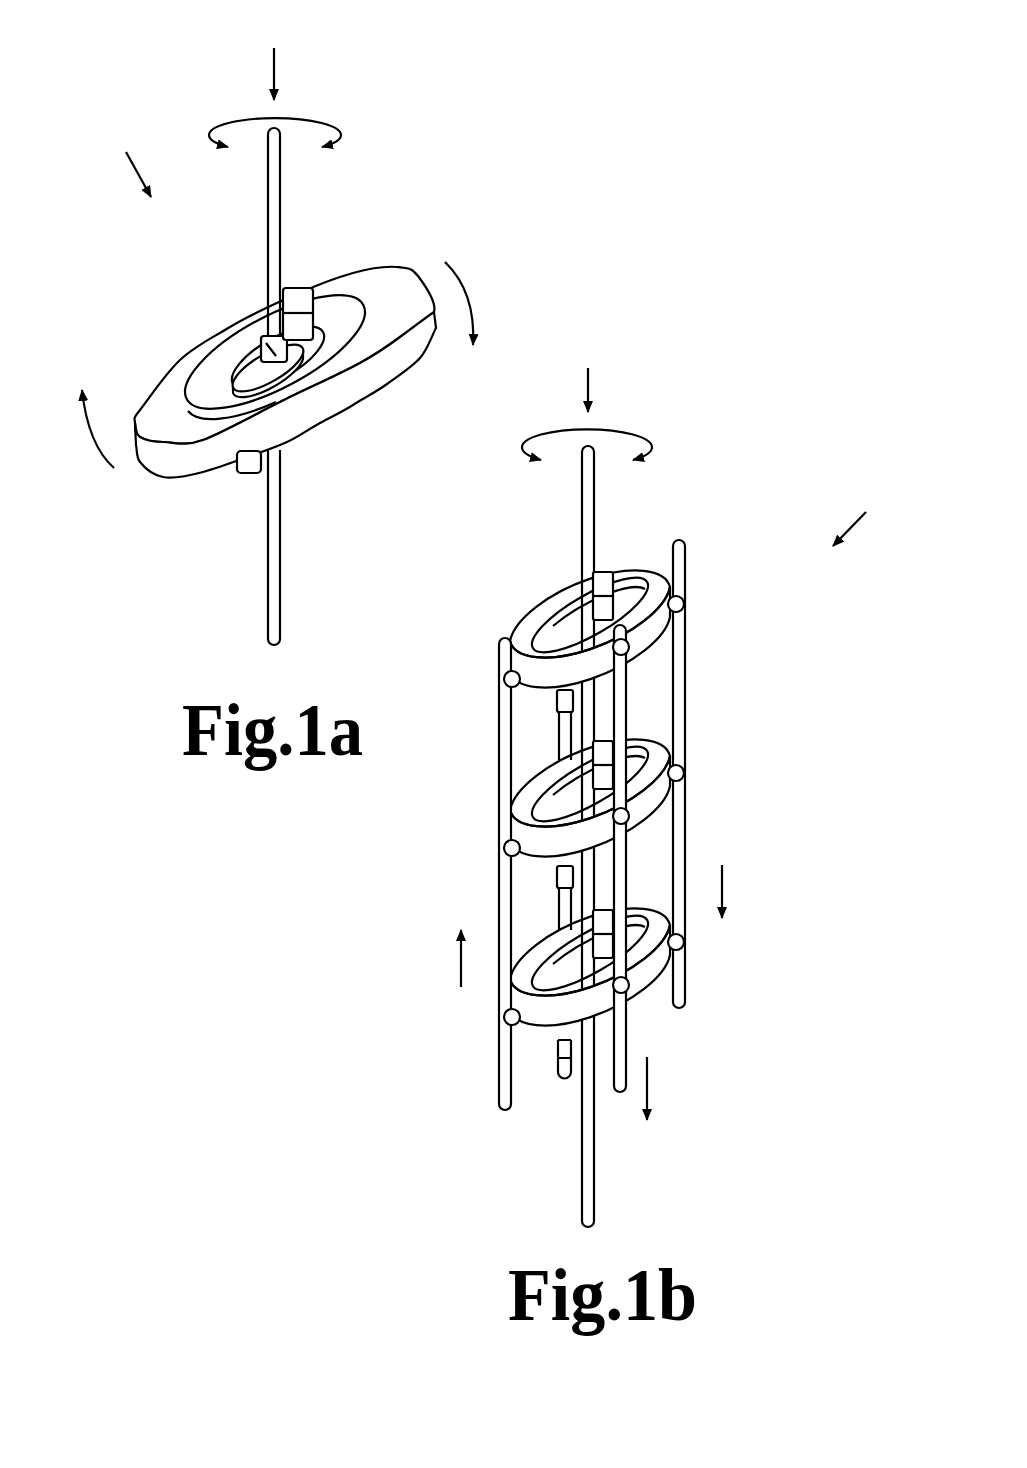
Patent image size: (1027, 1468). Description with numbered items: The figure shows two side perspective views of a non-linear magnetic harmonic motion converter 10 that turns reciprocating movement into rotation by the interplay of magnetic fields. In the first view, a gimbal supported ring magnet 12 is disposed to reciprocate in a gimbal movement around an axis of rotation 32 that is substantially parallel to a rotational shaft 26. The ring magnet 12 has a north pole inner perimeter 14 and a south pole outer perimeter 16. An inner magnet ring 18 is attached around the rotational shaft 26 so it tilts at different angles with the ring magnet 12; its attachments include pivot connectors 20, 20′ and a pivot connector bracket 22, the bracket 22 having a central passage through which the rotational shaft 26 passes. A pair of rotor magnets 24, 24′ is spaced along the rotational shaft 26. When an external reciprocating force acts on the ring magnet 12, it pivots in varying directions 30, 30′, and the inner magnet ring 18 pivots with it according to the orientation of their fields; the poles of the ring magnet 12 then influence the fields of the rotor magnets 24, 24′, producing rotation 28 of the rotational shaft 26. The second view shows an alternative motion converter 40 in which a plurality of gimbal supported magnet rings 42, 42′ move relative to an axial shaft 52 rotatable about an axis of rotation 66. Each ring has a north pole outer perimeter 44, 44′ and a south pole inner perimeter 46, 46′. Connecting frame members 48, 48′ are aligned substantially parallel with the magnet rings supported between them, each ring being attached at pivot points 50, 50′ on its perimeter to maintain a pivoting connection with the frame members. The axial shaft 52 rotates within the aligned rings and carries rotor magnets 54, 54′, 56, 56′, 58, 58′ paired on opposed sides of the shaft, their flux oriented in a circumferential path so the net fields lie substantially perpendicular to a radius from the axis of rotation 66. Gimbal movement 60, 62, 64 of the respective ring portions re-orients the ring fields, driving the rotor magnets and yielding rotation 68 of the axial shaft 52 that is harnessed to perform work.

In FIG. 1A, the non-linear magnetic harmonic motion converter 10 is at (130, 159).
In FIG. 1A, the gimbal supported ring magnet 12 is at (395, 280).
In FIG. 1A, the north pole inner perimeter 14 is at (337, 308).
In FIG. 1A, the south pole outer perimeter 16 is at (300, 412).
In FIG. 1A, the inner magnet ring 18 is at (180, 388).
In FIG. 1A, the pivot connector 20 is at (340, 391).
In FIG. 1A, the pivot connector 20′ is at (230, 352).
In FIG. 1A, the pivot connector bracket 22 is at (262, 338).
In FIG. 1A, the rotor magnet 24 is at (307, 292).
In FIG. 1A, the rotor magnet 24′ is at (240, 470).
In FIG. 1A, the rotational shaft 26 is at (279, 588).
In FIG. 1A, the rotation 28 is at (312, 120).
In FIG. 1A, the direction of gimbal movement 30 is at (90, 438).
In FIG. 1A, the direction of gimbal movement 30′ is at (470, 290).
In FIG. 1A, the axis of rotation 32 is at (278, 57).
In FIG. 1B, the motion converter 40 is at (860, 514).
In FIG. 1B, the gimbal supported magnet ring 42 is at (636, 575).
In FIG. 1B, the gimbal supported magnet ring 42′ is at (648, 808).
In FIG. 1B, the north pole outer perimeter 44 is at (655, 626).
In FIG. 1B, the north pole outer perimeter 44′ is at (532, 862).
In FIG. 1B, the south pole inner perimeter 46 is at (567, 607).
In FIG. 1B, the south pole inner perimeter 46′ is at (530, 790).
In FIG. 1B, the connecting frame member 48 is at (686, 545).
In FIG. 1B, the connecting frame member 48′ is at (627, 688).
In FIG. 1B, the pivot point 50 is at (684, 604).
In FIG. 1B, the pivot point 50′ is at (638, 650).
In FIG. 1B, the axial shaft 52 is at (596, 1182).
In FIG. 1B, the rotor magnet 54 is at (598, 568).
In FIG. 1B, the rotor magnet 54′ is at (556, 703).
In FIG. 1B, the rotor magnet 56 is at (603, 740).
In FIG. 1B, the rotor magnet 56′ is at (567, 878).
In FIG. 1B, the rotor magnet 58 is at (600, 910).
In FIG. 1B, the rotor magnet 58′ is at (560, 1058).
In FIG. 1B, the gimbal movement 60 is at (724, 893).
In FIG. 1B, the gimbal movement 62 is at (650, 1087).
In FIG. 1B, the gimbal movement 64 is at (460, 958).
In FIG. 1B, the axis of rotation 66 is at (589, 374).
In FIG. 1B, the rotation 68 is at (633, 432).